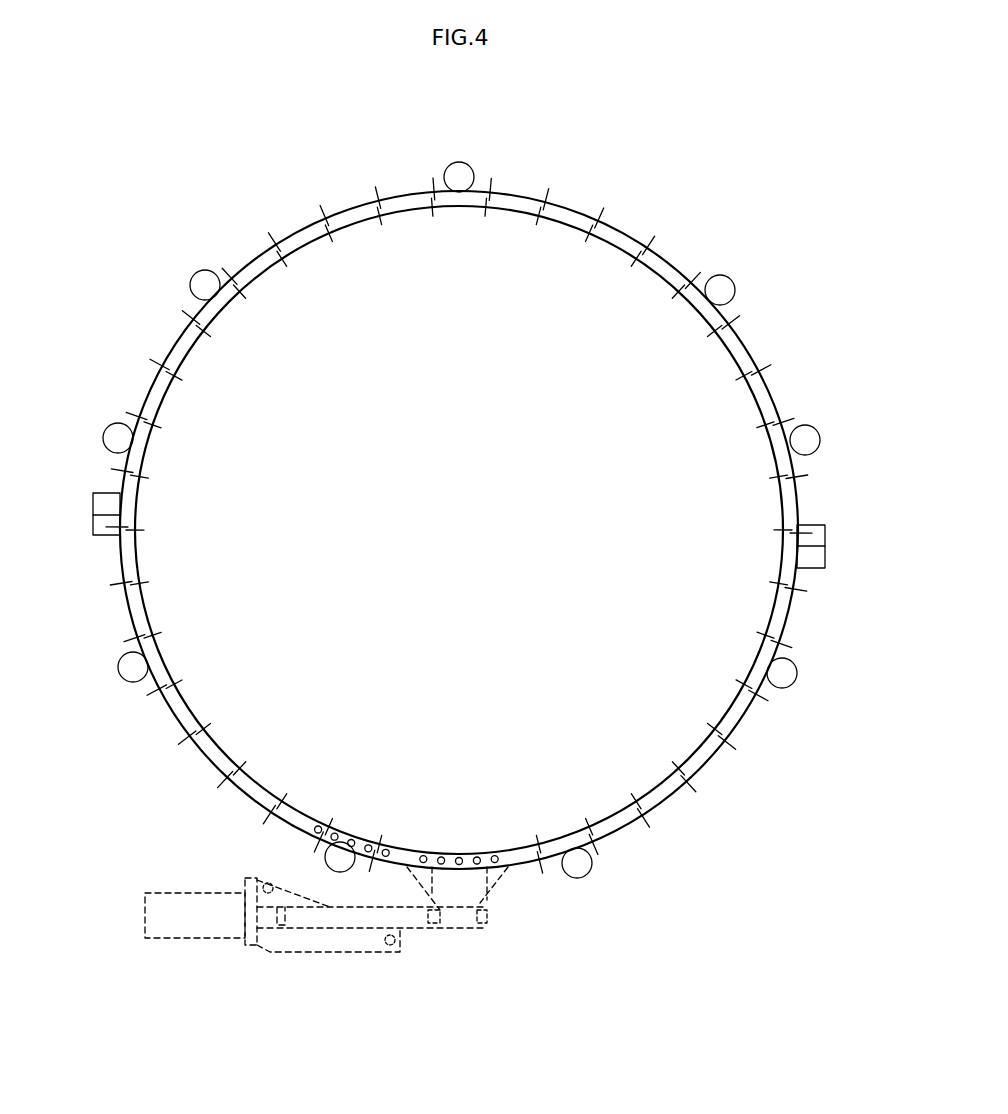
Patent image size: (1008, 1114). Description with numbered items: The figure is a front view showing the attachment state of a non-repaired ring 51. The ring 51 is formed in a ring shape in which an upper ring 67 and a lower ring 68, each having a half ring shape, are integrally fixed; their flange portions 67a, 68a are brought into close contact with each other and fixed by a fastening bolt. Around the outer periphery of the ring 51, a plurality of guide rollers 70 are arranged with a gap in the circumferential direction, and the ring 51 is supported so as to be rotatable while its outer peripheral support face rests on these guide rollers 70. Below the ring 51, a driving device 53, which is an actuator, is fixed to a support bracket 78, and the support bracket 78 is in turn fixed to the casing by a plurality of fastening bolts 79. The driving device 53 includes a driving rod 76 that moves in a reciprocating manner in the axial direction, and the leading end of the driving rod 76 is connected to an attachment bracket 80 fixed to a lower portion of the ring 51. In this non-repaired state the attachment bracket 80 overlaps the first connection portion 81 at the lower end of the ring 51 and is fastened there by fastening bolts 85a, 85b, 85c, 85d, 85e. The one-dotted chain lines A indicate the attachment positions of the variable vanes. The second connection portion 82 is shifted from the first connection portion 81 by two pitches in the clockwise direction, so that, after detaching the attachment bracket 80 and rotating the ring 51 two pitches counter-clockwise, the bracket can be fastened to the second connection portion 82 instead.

The ring 51 is at (266, 253).
The upper ring 67 is at (585, 205).
The lower ring 68 is at (618, 822).
The flange portion 67a is at (105, 492).
The flange portion 68a is at (106, 537).
The guide roller 70 is at (470, 170).
The one-dotted chain lines A is at (645, 235).
The first connection portion 81 is at (508, 833).
The second connection portion 82 is at (354, 835).
The fastening bolt 85a is at (424, 854).
The fastening bolt 85b is at (442, 856).
The fastening bolt 85c is at (460, 856).
The fastening bolt 85d is at (480, 855).
The fastening bolt 85e is at (497, 854).
The driving device 53 is at (215, 938).
The support bracket 78 is at (322, 945).
The fastening bolt 79 is at (262, 886).
The driving rod 76 is at (456, 930).
The attachment bracket 80 is at (490, 912).